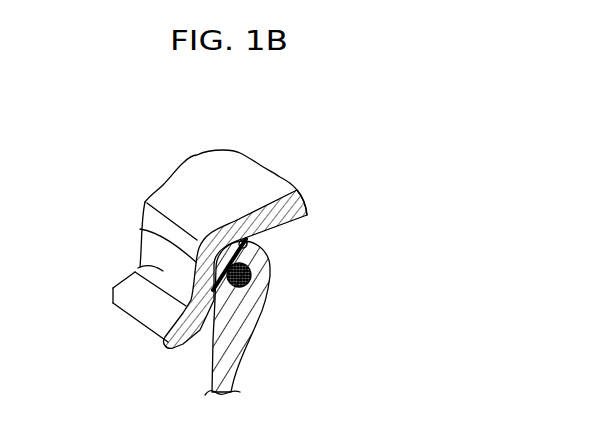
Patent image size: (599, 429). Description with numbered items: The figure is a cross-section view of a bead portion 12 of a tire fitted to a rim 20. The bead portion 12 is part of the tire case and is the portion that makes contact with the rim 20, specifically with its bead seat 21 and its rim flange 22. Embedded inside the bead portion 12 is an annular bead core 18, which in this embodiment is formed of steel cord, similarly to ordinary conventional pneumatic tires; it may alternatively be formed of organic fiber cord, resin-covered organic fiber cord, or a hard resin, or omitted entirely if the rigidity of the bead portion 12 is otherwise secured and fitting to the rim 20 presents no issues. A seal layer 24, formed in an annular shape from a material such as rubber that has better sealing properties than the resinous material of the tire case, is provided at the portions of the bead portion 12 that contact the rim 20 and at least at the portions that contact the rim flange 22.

The bead portion 12 is at (268, 306).
The bead core 18 is at (251, 273).
The rim 20 is at (222, 145).
The bead seat 21 is at (240, 240).
The rim flange 22 is at (143, 318).
The seal layer 24 is at (140, 229).